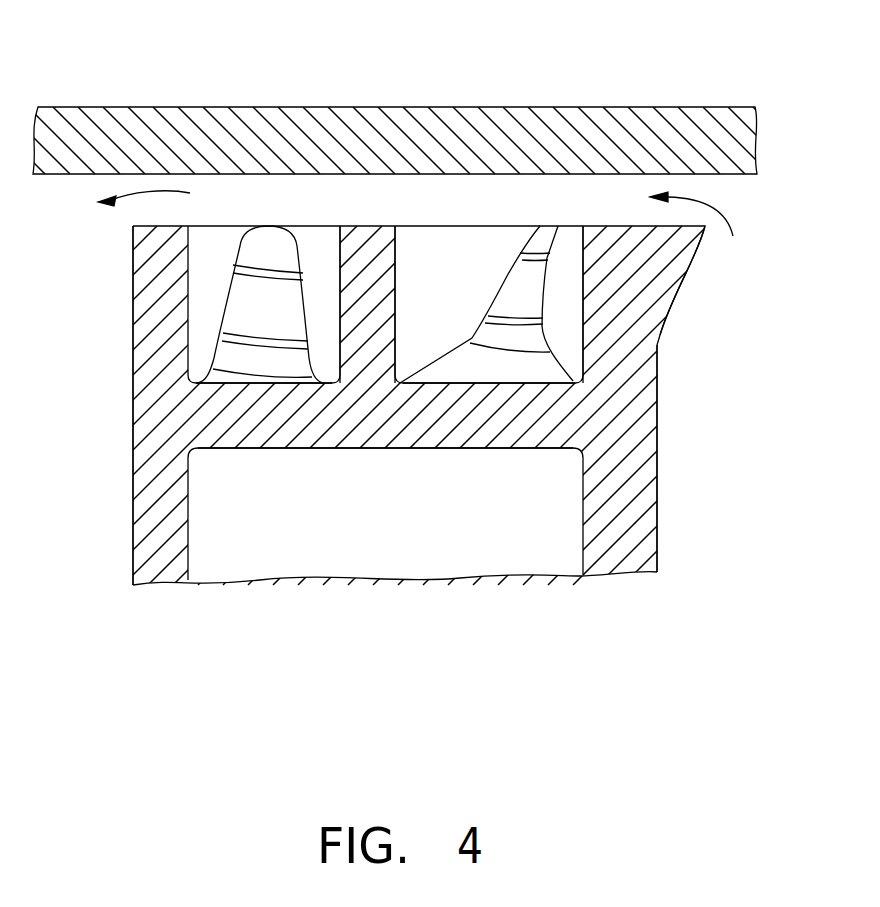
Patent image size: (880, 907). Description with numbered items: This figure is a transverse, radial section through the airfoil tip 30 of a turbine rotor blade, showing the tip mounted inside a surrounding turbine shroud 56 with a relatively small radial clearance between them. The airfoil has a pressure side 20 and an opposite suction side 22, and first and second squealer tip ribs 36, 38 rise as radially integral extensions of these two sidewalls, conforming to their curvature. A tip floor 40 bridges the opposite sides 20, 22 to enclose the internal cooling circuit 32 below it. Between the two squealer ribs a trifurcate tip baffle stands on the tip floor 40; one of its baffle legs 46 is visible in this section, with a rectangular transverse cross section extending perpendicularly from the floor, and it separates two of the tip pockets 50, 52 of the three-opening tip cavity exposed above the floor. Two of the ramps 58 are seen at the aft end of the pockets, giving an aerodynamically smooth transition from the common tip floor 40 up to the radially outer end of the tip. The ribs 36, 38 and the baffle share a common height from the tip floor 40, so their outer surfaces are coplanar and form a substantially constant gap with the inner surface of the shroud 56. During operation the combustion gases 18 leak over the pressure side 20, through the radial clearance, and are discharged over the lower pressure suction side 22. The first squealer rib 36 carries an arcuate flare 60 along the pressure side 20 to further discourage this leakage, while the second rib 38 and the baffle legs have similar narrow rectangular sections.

The combustion gases 18 is at (672, 422).
The pressure side 20 is at (657, 528).
The suction side 22 is at (133, 533).
The airfoil tip 30 is at (118, 246).
The internal cooling circuit 32 is at (392, 520).
The first squealer tip rib 36 is at (647, 300).
The second squealer tip rib 38 is at (133, 330).
The tip floor 40 is at (386, 430).
The baffle leg 46 is at (365, 226).
The tip pocket 50 is at (451, 245).
The tip pocket 52 is at (205, 245).
The turbine shroud 56 is at (732, 107).
The ramp 58 is at (282, 328).
The arcuate flare 60 is at (665, 322).